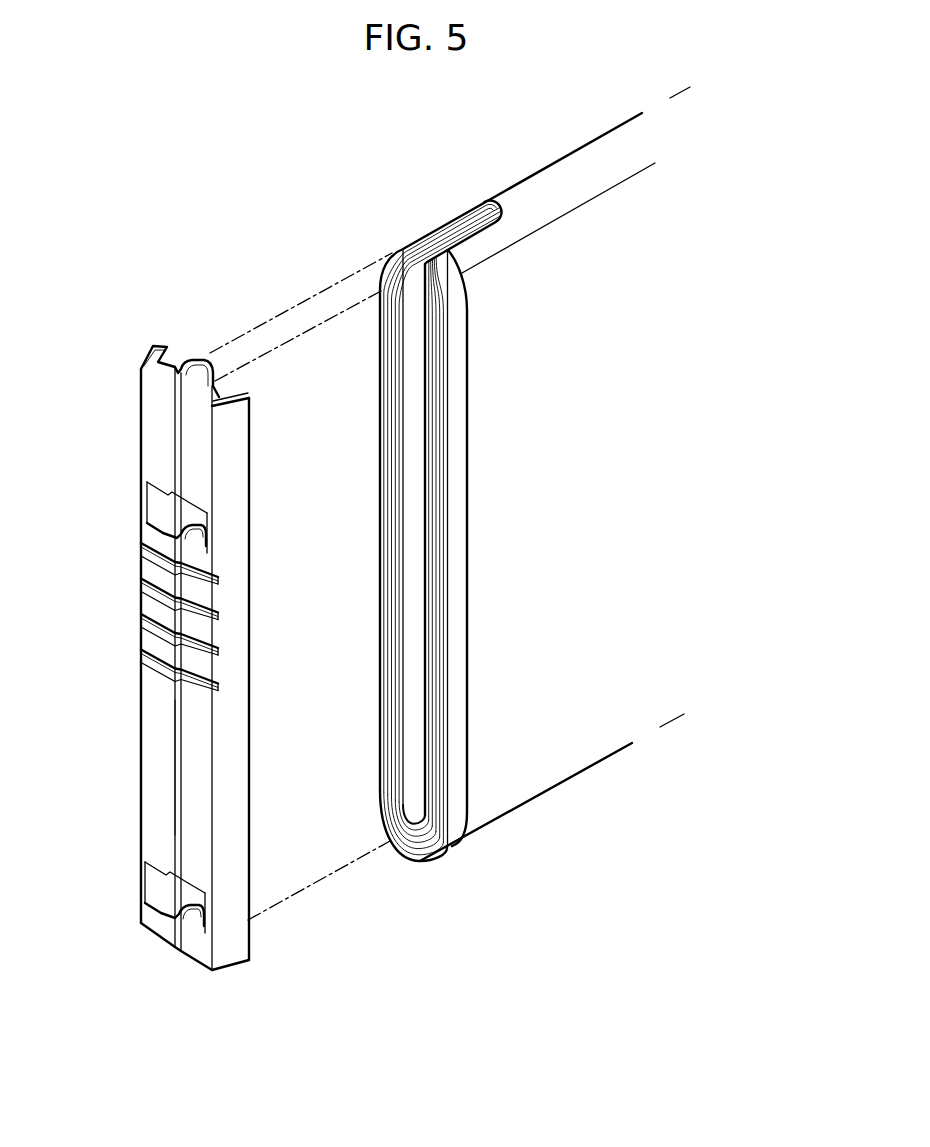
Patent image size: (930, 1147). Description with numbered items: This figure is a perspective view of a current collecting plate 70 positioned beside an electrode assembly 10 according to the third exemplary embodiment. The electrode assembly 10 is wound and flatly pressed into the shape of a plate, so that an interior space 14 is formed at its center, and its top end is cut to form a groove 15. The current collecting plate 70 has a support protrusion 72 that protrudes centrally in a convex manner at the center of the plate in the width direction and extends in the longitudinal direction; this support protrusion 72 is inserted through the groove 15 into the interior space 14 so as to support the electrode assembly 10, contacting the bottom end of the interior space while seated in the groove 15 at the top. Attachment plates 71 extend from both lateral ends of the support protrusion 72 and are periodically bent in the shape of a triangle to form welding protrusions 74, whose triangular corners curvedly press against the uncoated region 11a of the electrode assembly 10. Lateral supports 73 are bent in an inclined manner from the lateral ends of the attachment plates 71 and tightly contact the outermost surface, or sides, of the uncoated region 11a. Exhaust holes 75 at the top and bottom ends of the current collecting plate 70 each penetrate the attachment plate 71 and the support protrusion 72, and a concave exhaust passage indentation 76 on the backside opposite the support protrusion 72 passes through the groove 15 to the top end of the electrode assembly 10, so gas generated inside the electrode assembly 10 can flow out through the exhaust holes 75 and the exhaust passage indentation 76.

The electrode assembly 10 is at (513, 523).
The uncoated region 11a is at (453, 788).
The interior space 14 is at (423, 782).
The groove 15 is at (479, 214).
The current collecting plate 70 is at (127, 411).
The attachment plate 71 is at (197, 790).
The support protrusion 72 is at (209, 363).
The lateral support 73 is at (151, 346).
The welding protrusion 74 is at (142, 591).
The exhaust hole 75 is at (165, 512).
The exhaust passage indentation 76 is at (175, 830).